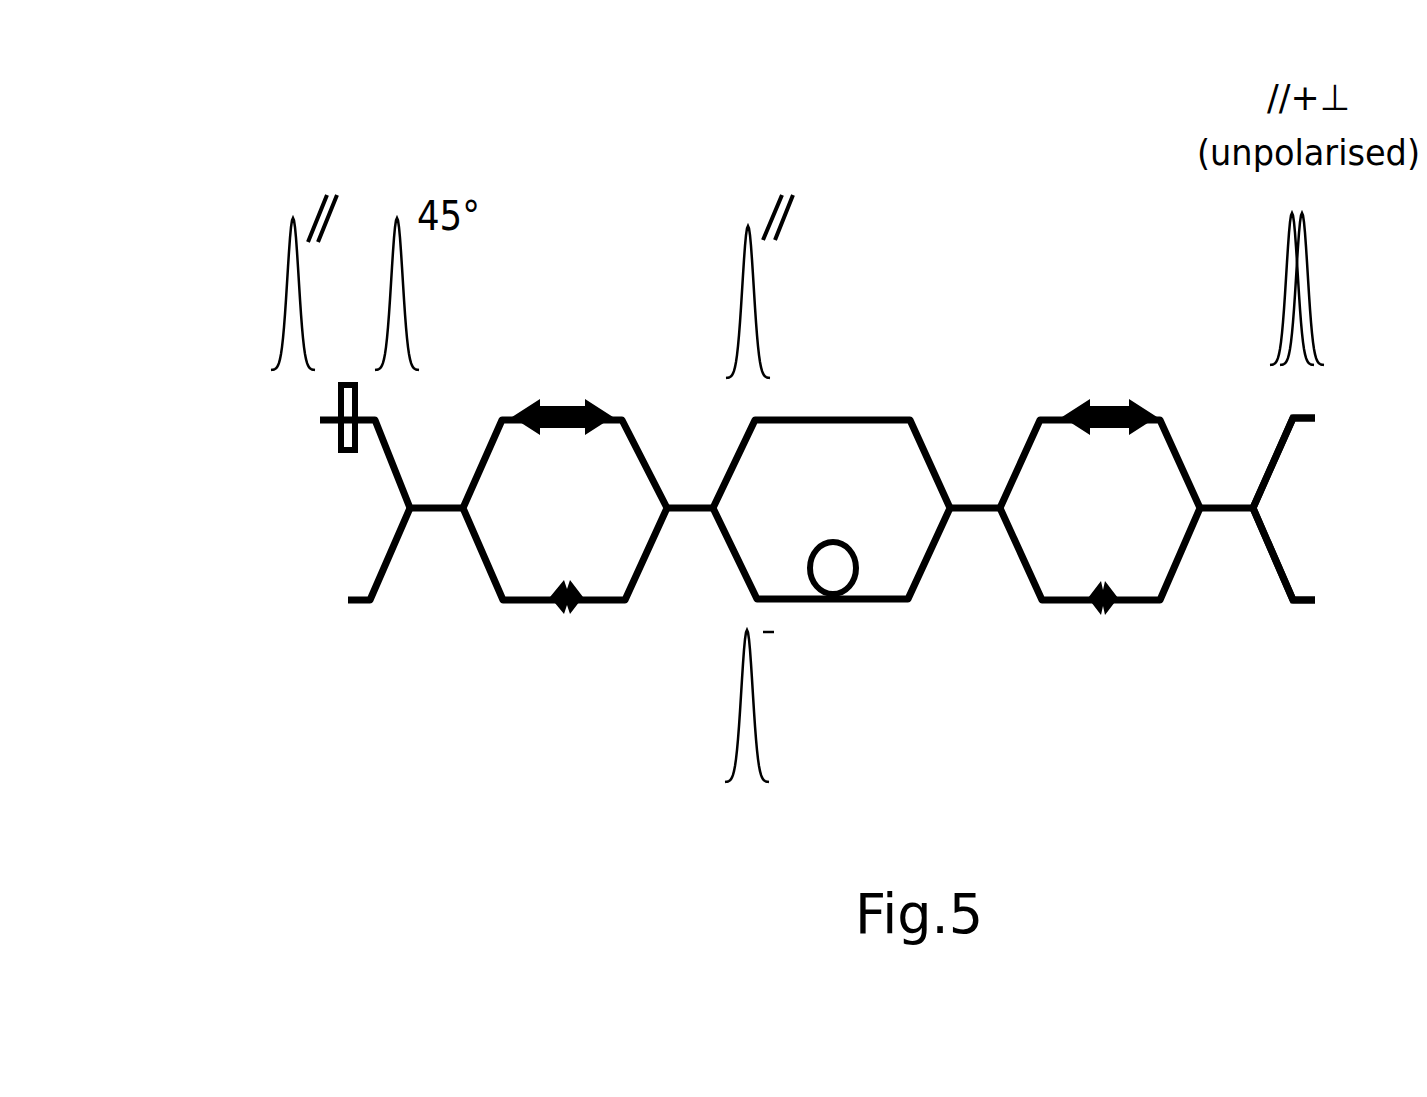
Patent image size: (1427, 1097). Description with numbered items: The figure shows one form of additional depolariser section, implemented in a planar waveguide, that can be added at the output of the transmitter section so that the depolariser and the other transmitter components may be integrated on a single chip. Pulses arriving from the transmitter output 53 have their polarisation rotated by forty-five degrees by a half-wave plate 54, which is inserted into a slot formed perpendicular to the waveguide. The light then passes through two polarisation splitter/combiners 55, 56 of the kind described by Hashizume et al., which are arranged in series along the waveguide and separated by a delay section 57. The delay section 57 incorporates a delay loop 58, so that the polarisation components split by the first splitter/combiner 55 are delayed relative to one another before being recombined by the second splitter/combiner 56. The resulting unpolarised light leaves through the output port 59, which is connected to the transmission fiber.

The transmitter output 53 is at (271, 300).
The half-wave plate 54 is at (342, 448).
The polarisation splitter/combiner 55 is at (519, 606).
The polarisation splitter/combiner 56 is at (1136, 606).
The delay section 57 is at (850, 613).
The delay loop 58 is at (833, 555).
The output port 59 is at (1316, 495).